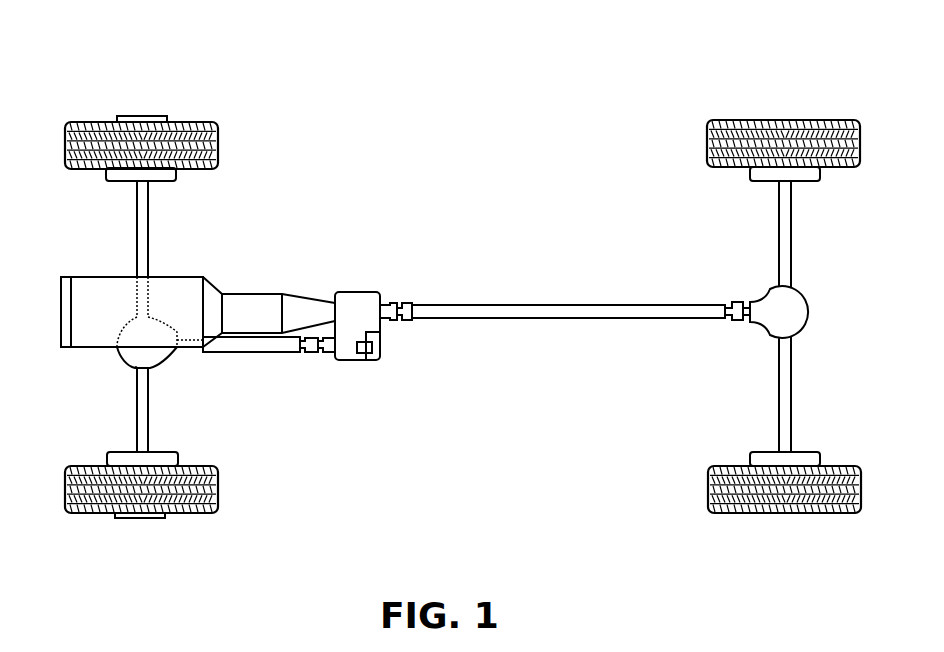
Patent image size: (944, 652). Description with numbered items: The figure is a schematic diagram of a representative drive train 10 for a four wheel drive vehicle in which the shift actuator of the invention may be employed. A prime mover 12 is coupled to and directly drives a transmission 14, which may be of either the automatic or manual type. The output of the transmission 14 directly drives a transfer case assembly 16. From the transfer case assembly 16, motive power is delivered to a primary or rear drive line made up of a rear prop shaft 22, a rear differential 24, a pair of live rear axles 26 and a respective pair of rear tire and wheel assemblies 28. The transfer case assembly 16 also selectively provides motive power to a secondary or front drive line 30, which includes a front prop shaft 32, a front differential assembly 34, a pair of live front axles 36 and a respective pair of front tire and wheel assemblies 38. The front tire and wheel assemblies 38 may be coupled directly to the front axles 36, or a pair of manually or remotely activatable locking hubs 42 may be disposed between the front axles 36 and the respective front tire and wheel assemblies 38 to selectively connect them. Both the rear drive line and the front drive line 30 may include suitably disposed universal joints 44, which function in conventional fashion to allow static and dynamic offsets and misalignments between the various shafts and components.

The drive train 10 is at (499, 118).
The prime mover 12 is at (93, 290).
The transmission 14 is at (260, 300).
The transfer case assembly 16 is at (360, 285).
The rear prop shaft 22 is at (557, 305).
The rear differential 24 is at (798, 303).
The rear axles 26 is at (791, 229).
The rear tire and wheel assemblies 28 is at (797, 108).
The front drive line 30 is at (312, 380).
The front prop shaft 32 is at (253, 347).
The front differential assembly 34 is at (132, 356).
The front axles 36 is at (148, 230).
The front tire and wheel assemblies 38 is at (236, 120).
The locking hubs 42 is at (140, 116).
The universal joints 44 is at (314, 352).